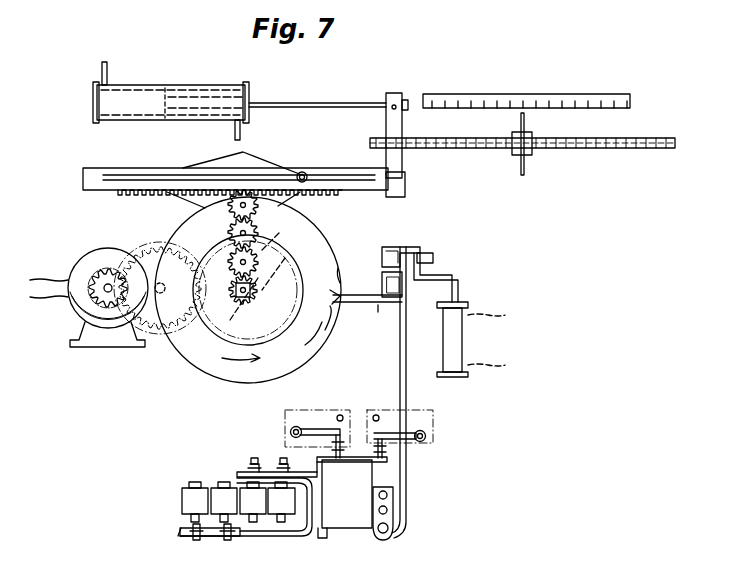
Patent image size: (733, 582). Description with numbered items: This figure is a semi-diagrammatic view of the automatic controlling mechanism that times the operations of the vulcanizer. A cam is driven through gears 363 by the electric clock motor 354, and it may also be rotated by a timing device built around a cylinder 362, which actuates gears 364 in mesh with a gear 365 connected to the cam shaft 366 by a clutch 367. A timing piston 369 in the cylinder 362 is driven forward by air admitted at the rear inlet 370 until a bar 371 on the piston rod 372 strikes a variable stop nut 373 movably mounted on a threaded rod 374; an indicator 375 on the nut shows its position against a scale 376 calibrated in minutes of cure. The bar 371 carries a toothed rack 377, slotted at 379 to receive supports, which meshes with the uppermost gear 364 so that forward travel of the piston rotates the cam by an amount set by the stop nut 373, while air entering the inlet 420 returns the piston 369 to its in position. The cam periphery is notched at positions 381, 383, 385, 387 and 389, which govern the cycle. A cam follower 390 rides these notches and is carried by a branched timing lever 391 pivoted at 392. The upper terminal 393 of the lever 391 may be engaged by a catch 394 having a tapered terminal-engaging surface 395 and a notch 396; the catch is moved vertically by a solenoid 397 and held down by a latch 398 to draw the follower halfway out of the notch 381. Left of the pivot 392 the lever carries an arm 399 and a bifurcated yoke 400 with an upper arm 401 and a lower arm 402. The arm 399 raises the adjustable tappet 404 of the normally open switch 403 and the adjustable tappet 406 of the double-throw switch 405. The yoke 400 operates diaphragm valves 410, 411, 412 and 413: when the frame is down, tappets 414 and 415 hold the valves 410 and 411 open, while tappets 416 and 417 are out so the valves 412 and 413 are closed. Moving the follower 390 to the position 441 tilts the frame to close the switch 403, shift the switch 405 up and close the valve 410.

The electric clock motor 354 is at (80, 262).
The cylinder 362 is at (147, 86).
The gears 363 is at (132, 268).
The gears 364 is at (258, 230).
The gear 365 is at (248, 290).
The cam shaft 366 is at (250, 290).
The clutch 367 is at (272, 276).
The timing piston 369 is at (167, 117).
The rear inlet 370 is at (101, 72).
The bar 371 is at (394, 92).
The piston rod 372 is at (322, 102).
The variable stop nut 373 is at (533, 136).
The threaded rod 374 is at (597, 140).
The indicator 375 is at (525, 168).
The scale 376 is at (592, 85).
The toothed rack 377 is at (395, 195).
The slot 379 is at (305, 175).
The notch position 381 is at (332, 297).
The notch position 383 is at (340, 307).
The notch position 385 is at (330, 328).
The notch position 387 is at (340, 270).
The notch position 389 is at (340, 285).
The cam follower 390 is at (378, 315).
The branched timing lever 391 is at (407, 396).
The pivot 392 is at (385, 540).
The upper terminal 393 is at (387, 282).
The catch 394 is at (428, 247).
The tapered terminal-engaging surface 395 is at (402, 247).
The notch 396 is at (390, 247).
The solenoid 397 is at (465, 343).
The latch 398 is at (436, 258).
The arm 399 is at (344, 465).
The bifurcated yoke 400 is at (284, 547).
The upper arm 401 is at (238, 473).
The lower arm 402 is at (180, 536).
The single pole single throw normally open switch 403 is at (291, 428).
The adjustable tappet 404 is at (333, 452).
The single pole double-throw switch 405 is at (430, 427).
The adjustable tappet 406 is at (390, 458).
The diaphragm valve 410 is at (281, 502).
The diaphragm valve 411 is at (253, 502).
The diaphragm valve 412 is at (224, 502).
The diaphragm valve 413 is at (195, 502).
The tappet 414 is at (281, 462).
The tappet 415 is at (251, 462).
The tappet 416 is at (233, 536).
The tappet 417 is at (204, 541).
The inlet 420 is at (242, 132).
The position 441 is at (309, 330).